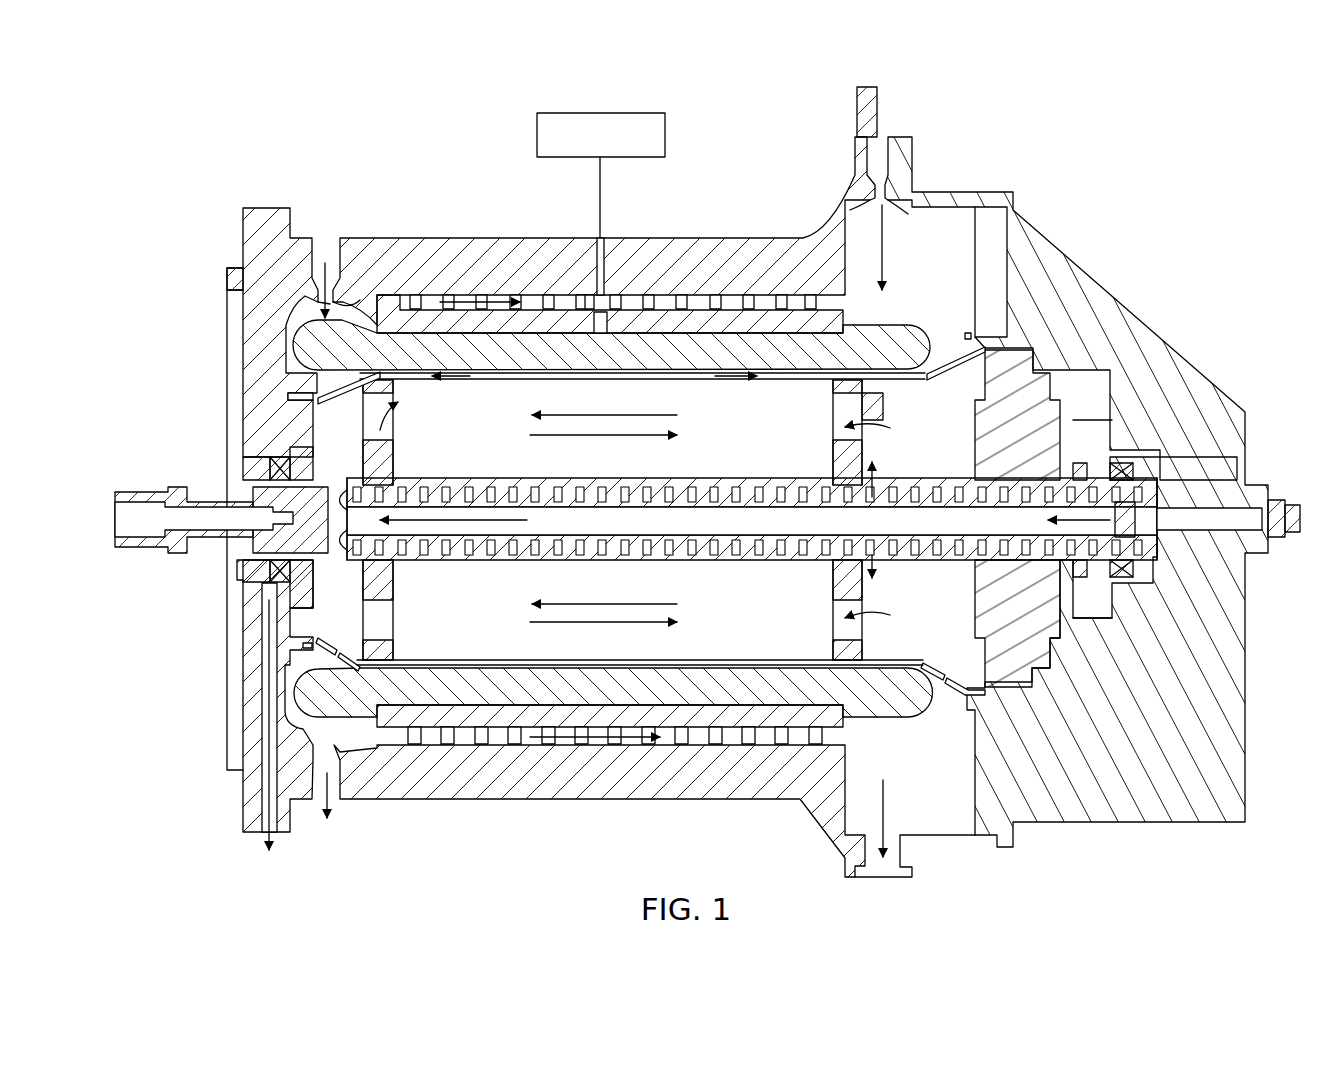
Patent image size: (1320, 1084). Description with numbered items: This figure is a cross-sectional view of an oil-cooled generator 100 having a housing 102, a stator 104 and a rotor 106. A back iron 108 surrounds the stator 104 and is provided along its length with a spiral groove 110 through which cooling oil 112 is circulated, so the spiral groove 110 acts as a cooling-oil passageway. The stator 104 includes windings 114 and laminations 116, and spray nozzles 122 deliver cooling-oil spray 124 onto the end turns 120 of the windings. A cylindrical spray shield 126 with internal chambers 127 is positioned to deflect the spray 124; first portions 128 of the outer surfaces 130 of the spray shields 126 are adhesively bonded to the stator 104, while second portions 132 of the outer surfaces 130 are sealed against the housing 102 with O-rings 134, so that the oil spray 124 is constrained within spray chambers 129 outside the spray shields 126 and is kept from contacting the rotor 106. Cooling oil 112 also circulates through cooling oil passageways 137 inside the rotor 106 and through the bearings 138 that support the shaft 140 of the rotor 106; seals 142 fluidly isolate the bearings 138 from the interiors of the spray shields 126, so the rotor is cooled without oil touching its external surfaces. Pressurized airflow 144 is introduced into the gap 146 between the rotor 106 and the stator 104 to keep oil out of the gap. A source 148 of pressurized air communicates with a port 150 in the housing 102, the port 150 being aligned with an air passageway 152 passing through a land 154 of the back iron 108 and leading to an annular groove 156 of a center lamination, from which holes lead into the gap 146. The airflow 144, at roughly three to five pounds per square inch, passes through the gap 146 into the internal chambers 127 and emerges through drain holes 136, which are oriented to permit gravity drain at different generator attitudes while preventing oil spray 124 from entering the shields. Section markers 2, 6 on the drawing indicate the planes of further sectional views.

The oil-cooled generator 100 is at (448, 165).
The housing 102 is at (518, 240).
The stator 104 is at (828, 327).
The rotor 106 is at (520, 665).
The back iron 108 is at (720, 722).
The spiral groove 110 is at (718, 748).
The cooling oil 112 is at (492, 297).
The windings 114 is at (740, 345).
The laminations of a first type 116 is at (425, 323).
The end turns 120 is at (298, 352).
The spray nozzles 122 is at (340, 290).
The cooling-oil spray 124 is at (318, 290).
The cylindrical spray shield 126 is at (350, 388).
The internal chambers 127 is at (370, 462).
The first portions 128 is at (410, 667).
The spray chambers 129 is at (287, 340).
The outer surfaces 130 is at (390, 658).
The second portions 132 is at (300, 393).
The O-rings 134 is at (305, 400).
The drain holes 136 is at (338, 647).
The cooling oil passageways 137 is at (627, 497).
The bearings 138 is at (1135, 470).
The shaft 140 is at (945, 480).
The seals 142 is at (1083, 450).
The pressurized airflow 144 is at (728, 380).
The gap 146 is at (420, 383).
The source of pressurized air 148 is at (665, 122).
The port 150 is at (604, 245).
The air passageway 152 is at (615, 300).
The land 154 is at (592, 300).
The annular groove 156 is at (590, 330).
The section line 2- 2 is at (600, 800).
The section line 6- 6 is at (713, 322).